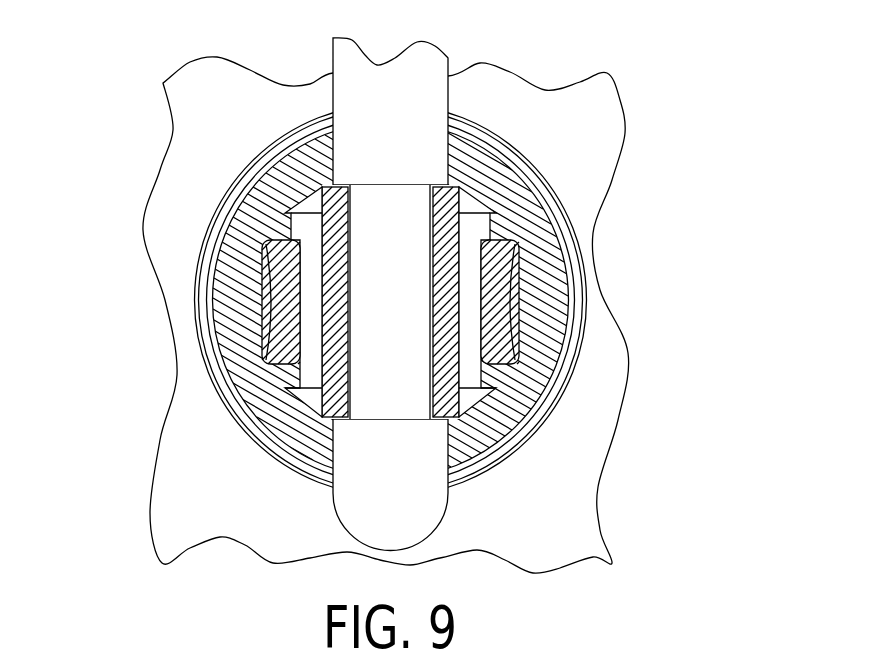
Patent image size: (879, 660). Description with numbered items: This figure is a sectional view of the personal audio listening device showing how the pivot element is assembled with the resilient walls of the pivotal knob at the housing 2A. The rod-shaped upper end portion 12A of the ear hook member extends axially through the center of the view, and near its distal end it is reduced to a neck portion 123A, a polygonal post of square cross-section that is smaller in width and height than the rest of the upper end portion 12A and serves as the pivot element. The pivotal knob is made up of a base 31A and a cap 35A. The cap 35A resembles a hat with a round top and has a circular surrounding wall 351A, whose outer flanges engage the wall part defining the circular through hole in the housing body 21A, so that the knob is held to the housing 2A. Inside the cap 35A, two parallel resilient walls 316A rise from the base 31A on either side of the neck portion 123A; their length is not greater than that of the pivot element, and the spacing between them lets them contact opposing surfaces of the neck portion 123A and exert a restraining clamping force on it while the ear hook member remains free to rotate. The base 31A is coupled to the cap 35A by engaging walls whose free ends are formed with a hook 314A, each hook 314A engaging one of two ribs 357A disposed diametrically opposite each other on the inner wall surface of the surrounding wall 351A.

The housing 2A is at (395, 292).
The housing body 21A is at (578, 133).
The surrounding wall 351A is at (275, 192).
The cap 35A is at (207, 210).
The base 31A is at (467, 232).
The resilient walls 316A is at (327, 290).
The ribs 357A is at (252, 308).
The hook 314A is at (273, 323).
The neck portion 123A is at (393, 380).
The upper end portion 12A is at (425, 508).